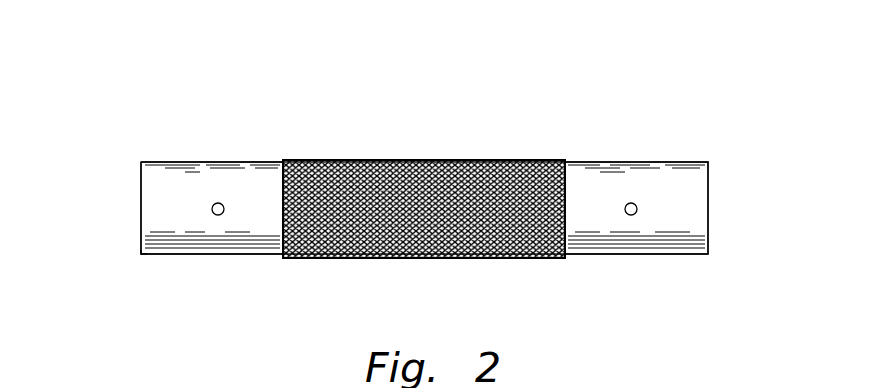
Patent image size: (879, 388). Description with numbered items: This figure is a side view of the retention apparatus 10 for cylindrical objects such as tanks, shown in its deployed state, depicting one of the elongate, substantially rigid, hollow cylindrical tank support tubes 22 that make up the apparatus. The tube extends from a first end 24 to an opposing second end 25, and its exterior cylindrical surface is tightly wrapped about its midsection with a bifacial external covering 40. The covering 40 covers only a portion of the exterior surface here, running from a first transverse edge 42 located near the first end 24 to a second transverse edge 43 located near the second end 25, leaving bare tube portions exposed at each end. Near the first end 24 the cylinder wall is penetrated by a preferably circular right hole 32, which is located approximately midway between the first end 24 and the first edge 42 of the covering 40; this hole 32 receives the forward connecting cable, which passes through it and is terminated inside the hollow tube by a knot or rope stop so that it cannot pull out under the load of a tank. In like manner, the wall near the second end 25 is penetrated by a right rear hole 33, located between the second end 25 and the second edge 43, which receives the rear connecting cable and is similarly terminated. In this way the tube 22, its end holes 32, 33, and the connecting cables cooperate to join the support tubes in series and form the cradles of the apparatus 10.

The retention apparatus 10 is at (185, 131).
The tank support tube 22 is at (141, 254).
The first end 24 is at (708, 208).
The second end 25 is at (141, 205).
The right hole 32 is at (631, 203).
The right rear hole 33 is at (218, 203).
The bifacial external covering 40 is at (430, 200).
The first transverse edge 42 is at (567, 223).
The second transverse edge 43 is at (284, 222).